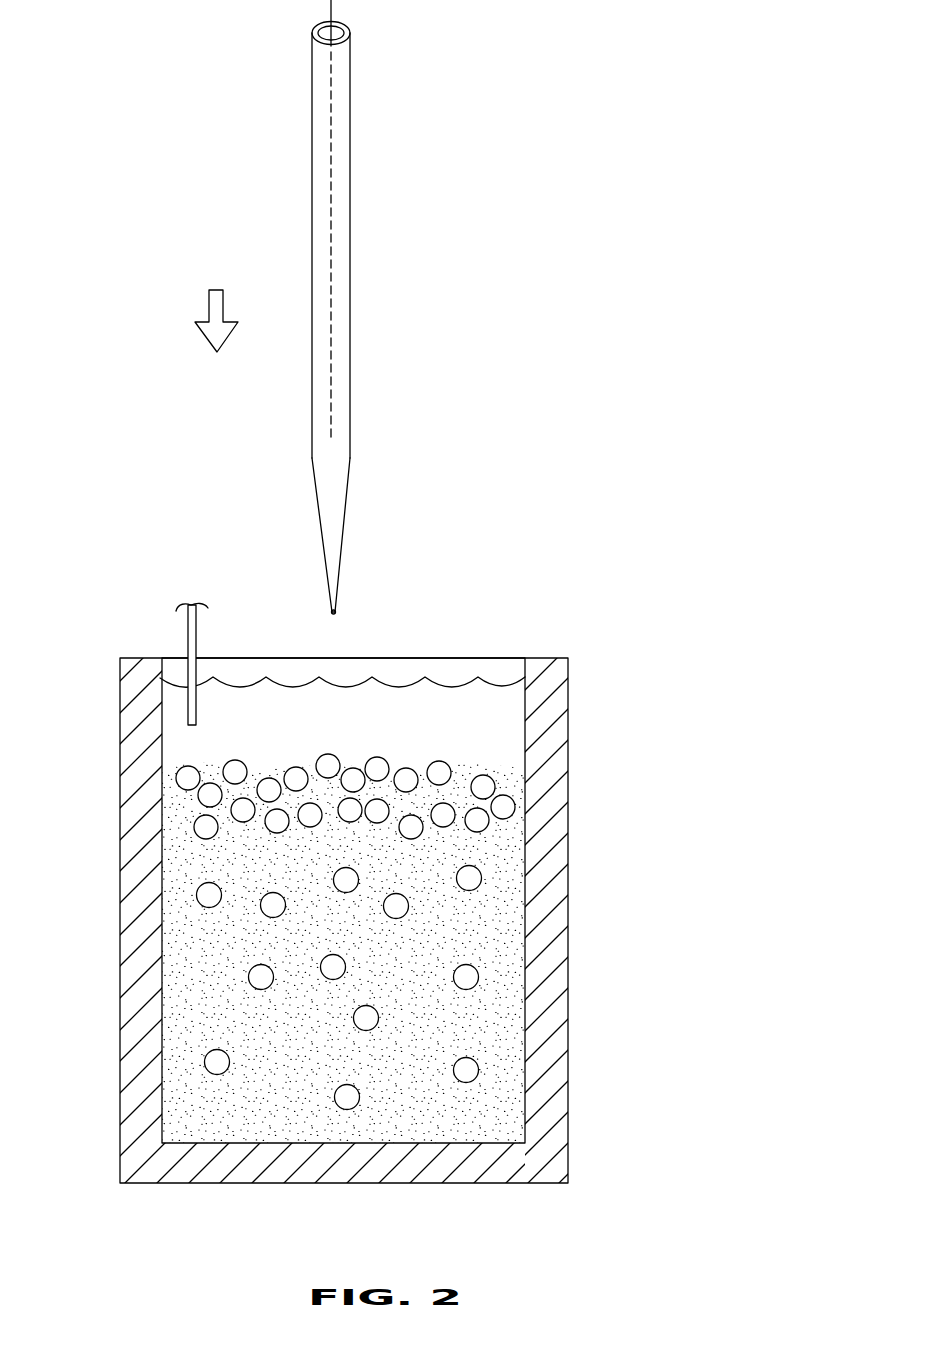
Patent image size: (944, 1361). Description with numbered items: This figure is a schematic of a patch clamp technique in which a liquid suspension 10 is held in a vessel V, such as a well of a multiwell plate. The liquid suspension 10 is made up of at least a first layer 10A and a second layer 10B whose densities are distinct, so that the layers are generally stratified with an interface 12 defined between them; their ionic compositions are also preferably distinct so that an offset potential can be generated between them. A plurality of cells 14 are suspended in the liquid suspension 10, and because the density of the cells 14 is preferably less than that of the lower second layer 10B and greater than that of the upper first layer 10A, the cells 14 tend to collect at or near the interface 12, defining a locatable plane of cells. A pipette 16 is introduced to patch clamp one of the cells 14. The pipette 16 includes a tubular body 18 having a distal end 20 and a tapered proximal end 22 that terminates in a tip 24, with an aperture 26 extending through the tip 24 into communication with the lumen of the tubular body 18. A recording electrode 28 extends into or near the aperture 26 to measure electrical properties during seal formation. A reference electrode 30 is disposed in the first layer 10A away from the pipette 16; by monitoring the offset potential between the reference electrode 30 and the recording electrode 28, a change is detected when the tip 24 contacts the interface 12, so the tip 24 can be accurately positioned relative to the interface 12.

The liquid suspension 10 is at (355, 877).
The first layer 10A is at (500, 728).
The second layer 10B is at (218, 1015).
The interface 12 is at (355, 857).
The cells 14 is at (327, 765).
The pipette 16 is at (344, 316).
The tubular body 18 is at (342, 153).
The distal end 20 is at (350, 32).
The tapered proximal end 22 is at (335, 538).
The tip 24 is at (335, 605).
The aperture 26 is at (333, 613).
The recording electrode 28 is at (332, 191).
The reference electrode 30 is at (196, 705).
The vessel V is at (550, 1017).